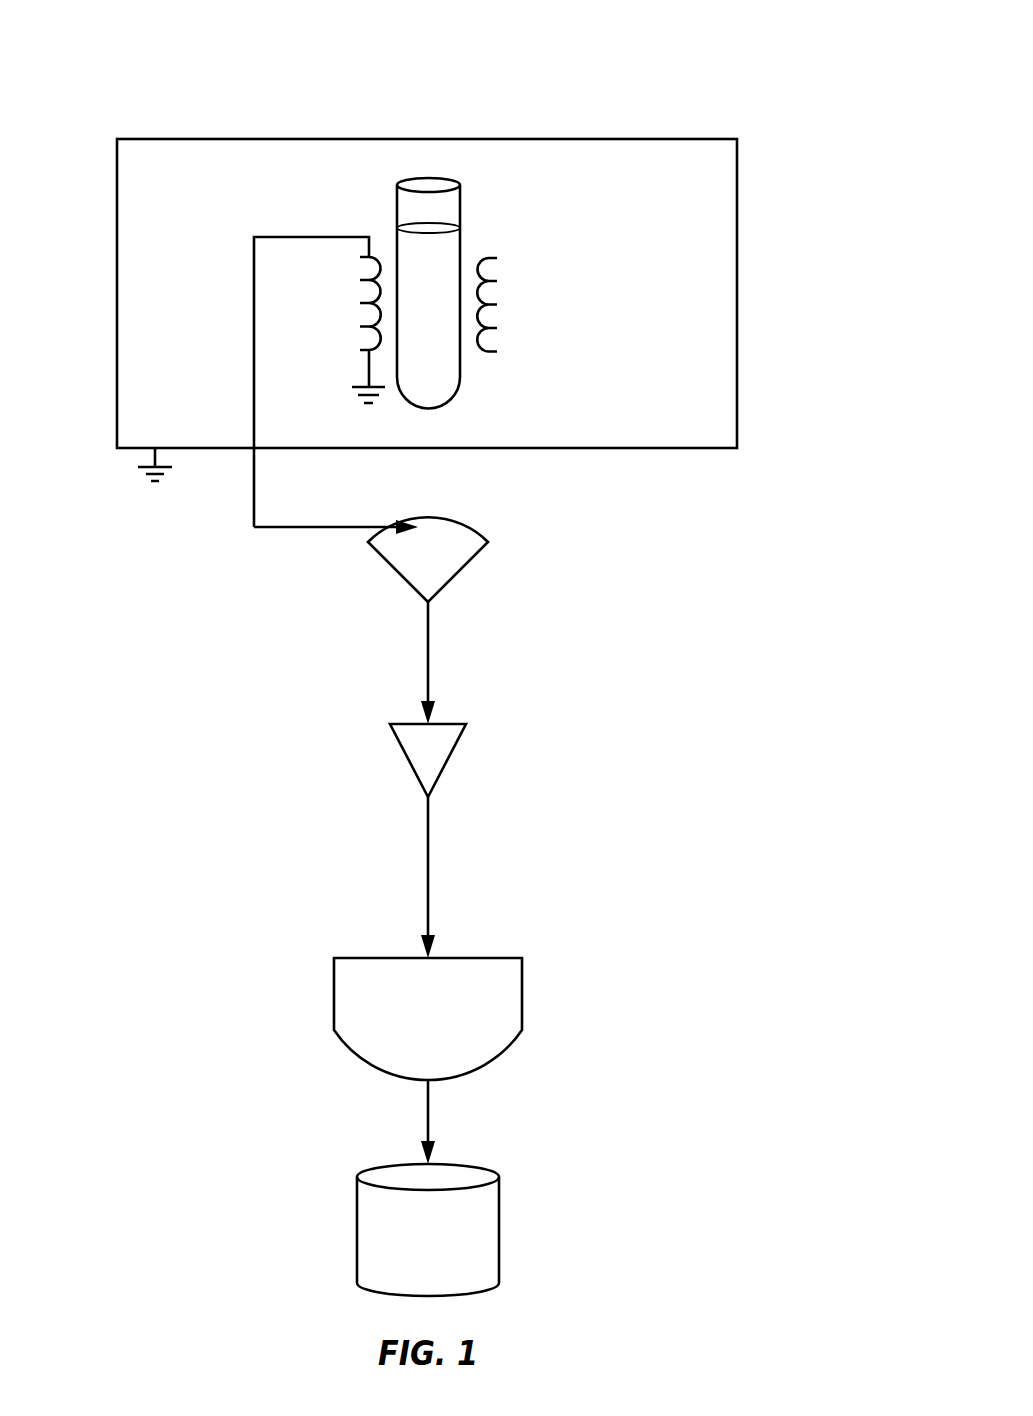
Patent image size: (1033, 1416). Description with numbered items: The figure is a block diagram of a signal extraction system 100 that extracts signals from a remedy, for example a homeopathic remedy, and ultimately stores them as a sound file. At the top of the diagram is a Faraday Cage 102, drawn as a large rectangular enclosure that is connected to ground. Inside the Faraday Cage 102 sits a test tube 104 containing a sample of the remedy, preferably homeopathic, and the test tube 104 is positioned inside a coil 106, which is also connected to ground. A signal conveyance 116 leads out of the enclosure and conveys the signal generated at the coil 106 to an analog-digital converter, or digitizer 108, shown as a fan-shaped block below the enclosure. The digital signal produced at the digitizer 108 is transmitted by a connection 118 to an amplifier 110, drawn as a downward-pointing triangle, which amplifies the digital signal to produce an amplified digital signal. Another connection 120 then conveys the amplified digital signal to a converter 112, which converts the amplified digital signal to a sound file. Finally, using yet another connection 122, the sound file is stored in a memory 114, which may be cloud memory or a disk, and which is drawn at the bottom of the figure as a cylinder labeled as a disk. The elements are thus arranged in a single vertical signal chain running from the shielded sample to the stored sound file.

The signal extraction system 100 is at (530, 34).
The Faraday Cage 102 is at (655, 139).
The test tube 104 is at (460, 235).
The coil 106 is at (497, 326).
The analog-digital converter (digitizer) 108 is at (455, 575).
The amplifier 110 is at (452, 752).
The converter 112 is at (522, 992).
The memory 114 is at (499, 1177).
The signal conveyance 116 is at (254, 527).
The connection 118 is at (427, 645).
The connection 120 is at (427, 897).
The connection 122 is at (427, 1113).